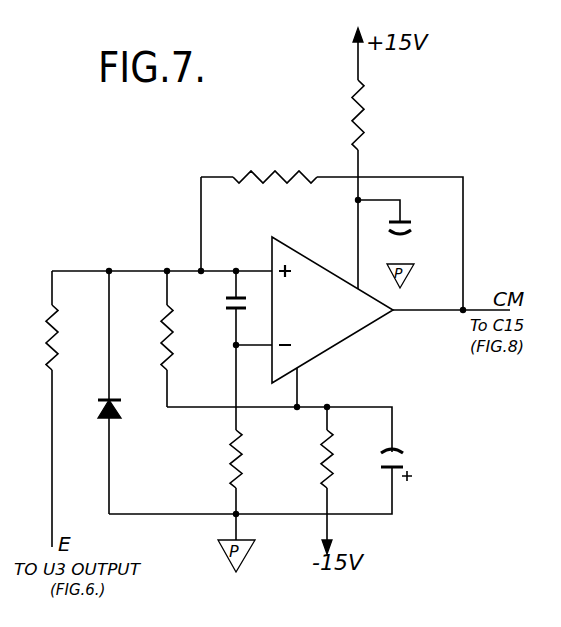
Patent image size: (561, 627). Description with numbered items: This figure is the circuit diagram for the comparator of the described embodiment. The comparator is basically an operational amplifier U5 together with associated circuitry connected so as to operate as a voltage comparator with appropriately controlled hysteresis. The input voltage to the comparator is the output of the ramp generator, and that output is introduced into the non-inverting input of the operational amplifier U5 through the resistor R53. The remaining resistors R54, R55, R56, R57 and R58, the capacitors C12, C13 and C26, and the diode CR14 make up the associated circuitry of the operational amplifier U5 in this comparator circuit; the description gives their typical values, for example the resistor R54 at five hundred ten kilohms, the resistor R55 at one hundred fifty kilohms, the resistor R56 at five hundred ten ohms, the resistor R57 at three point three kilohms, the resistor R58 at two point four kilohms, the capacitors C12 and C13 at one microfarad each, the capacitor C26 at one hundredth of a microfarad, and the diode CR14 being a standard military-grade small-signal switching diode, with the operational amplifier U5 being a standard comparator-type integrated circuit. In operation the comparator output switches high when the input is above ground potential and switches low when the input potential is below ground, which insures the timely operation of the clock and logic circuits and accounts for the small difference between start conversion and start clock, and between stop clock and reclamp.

The resistor R53 is at (34, 337).
The resistor R54 is at (149, 337).
The resistor R55 is at (275, 163).
The resistor R56 is at (385, 115).
The resistor R57 is at (216, 459).
The resistor R58 is at (305, 459).
The capacitor C12 is at (424, 233).
The capacitor C13 is at (419, 465).
The capacitor C26 is at (223, 315).
The diode CR14 is at (91, 420).
The operational amplifier U5 is at (332, 310).